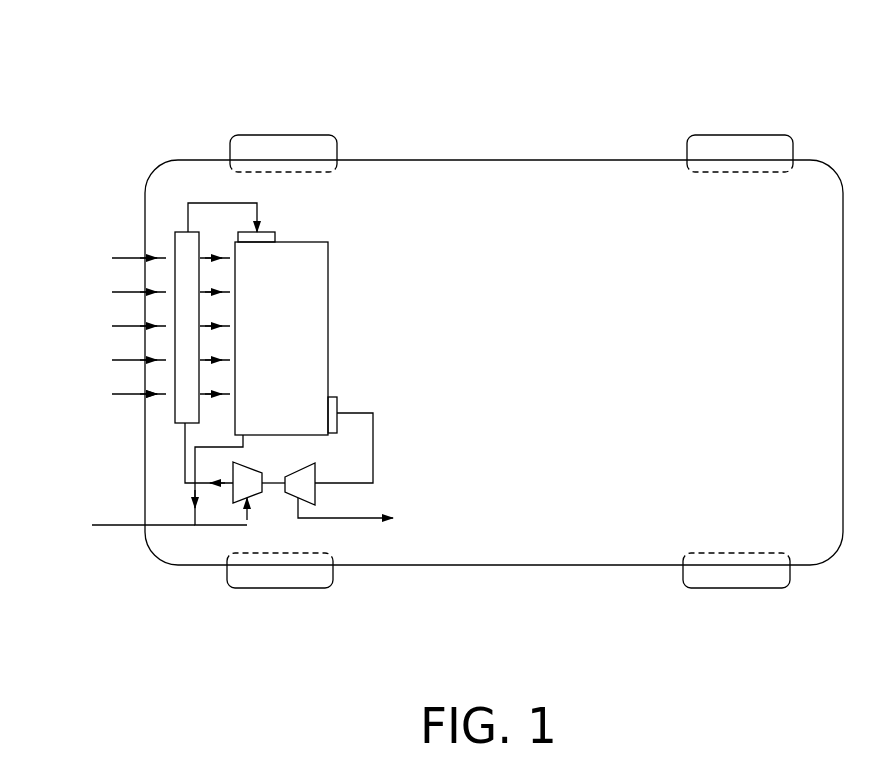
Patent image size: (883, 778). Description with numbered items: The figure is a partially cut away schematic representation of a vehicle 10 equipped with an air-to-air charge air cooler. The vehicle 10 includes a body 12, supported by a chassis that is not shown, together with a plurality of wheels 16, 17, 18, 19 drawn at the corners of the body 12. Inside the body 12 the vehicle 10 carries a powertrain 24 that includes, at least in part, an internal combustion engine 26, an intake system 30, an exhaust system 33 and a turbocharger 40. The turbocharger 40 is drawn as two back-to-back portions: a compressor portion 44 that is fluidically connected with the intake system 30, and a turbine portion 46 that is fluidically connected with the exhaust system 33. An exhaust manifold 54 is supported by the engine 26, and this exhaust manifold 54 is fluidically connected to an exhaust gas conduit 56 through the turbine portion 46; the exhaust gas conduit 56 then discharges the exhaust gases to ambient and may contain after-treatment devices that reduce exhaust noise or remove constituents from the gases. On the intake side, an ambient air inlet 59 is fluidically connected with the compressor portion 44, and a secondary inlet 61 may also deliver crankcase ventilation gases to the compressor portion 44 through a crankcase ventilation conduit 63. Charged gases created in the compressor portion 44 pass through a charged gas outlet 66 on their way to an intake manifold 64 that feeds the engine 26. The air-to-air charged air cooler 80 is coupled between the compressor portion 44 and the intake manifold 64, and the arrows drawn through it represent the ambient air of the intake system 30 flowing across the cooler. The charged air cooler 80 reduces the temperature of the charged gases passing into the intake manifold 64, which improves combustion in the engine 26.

The vehicle 10 is at (108, 88).
The body 12 is at (562, 158).
The wheel 16 is at (300, 142).
The wheel 17 is at (265, 588).
The wheel 18 is at (785, 135).
The wheel 19 is at (785, 588).
The powertrain 24 is at (360, 310).
The internal combustion engine 26 is at (297, 323).
The intake system 30 is at (157, 437).
The exhaust system 33 is at (397, 447).
The turbocharger 40 is at (265, 527).
The compressor portion 44 is at (235, 468).
The turbine portion 46 is at (290, 506).
The exhaust manifold 54 is at (337, 405).
The exhaust gas conduit 56 is at (353, 520).
The ambient air inlet 59 is at (170, 527).
The secondary inlet 61 is at (251, 433).
The crankcase ventilation conduit 63 is at (205, 445).
The intake manifold 64 is at (272, 230).
The charged gas outlet 66 is at (183, 466).
The air-to-air charged air cooler 80 is at (158, 214).